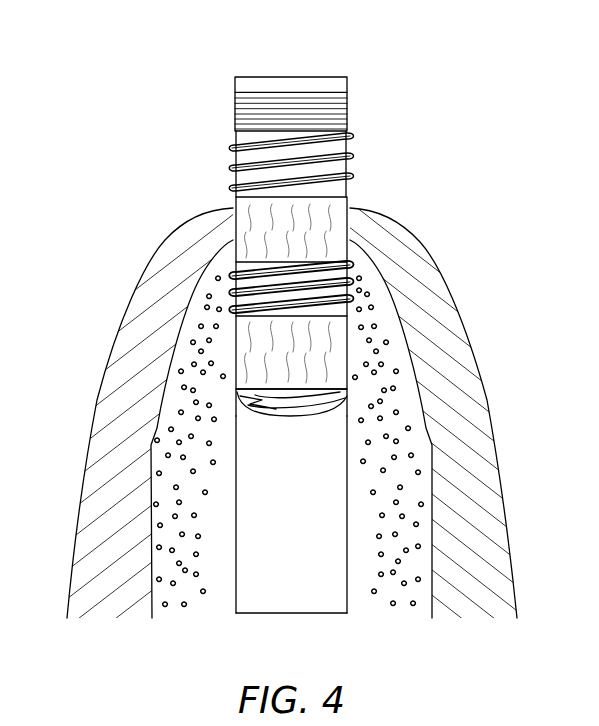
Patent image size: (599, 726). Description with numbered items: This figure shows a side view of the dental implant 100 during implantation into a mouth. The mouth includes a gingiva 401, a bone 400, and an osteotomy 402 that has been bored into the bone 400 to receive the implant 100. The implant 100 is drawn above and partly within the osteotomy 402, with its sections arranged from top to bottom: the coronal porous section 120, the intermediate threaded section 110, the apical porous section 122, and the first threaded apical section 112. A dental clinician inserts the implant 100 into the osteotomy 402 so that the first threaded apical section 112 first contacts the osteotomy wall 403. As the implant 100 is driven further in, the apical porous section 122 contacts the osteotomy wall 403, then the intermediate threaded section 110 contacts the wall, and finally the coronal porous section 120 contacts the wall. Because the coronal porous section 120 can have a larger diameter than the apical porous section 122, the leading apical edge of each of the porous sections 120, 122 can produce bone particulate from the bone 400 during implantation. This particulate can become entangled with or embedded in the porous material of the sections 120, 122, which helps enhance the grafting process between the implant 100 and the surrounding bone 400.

The dental implant 100 is at (379, 220).
The intermediate threaded section 110 is at (360, 296).
The first threaded apical section 112 is at (347, 393).
The coronal porous section 120 is at (348, 204).
The apical porous section 122 is at (348, 357).
The bone 400 is at (187, 605).
The gingiva 401 is at (81, 558).
The osteotomy 402 is at (286, 602).
The osteotomy wall 403 is at (347, 593).